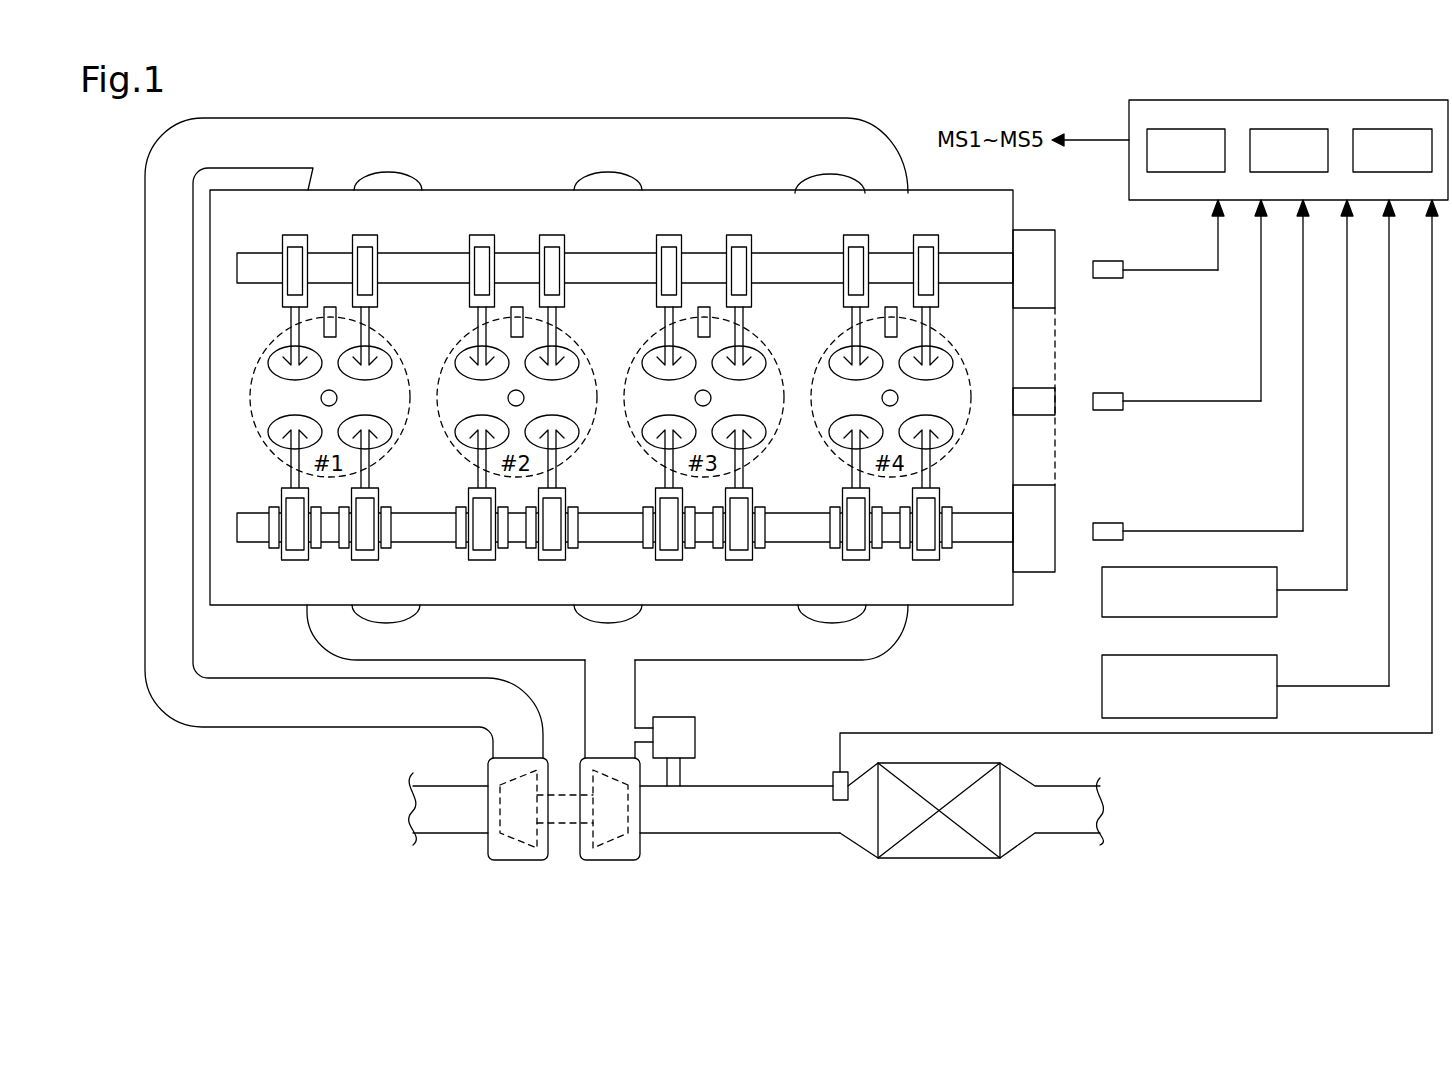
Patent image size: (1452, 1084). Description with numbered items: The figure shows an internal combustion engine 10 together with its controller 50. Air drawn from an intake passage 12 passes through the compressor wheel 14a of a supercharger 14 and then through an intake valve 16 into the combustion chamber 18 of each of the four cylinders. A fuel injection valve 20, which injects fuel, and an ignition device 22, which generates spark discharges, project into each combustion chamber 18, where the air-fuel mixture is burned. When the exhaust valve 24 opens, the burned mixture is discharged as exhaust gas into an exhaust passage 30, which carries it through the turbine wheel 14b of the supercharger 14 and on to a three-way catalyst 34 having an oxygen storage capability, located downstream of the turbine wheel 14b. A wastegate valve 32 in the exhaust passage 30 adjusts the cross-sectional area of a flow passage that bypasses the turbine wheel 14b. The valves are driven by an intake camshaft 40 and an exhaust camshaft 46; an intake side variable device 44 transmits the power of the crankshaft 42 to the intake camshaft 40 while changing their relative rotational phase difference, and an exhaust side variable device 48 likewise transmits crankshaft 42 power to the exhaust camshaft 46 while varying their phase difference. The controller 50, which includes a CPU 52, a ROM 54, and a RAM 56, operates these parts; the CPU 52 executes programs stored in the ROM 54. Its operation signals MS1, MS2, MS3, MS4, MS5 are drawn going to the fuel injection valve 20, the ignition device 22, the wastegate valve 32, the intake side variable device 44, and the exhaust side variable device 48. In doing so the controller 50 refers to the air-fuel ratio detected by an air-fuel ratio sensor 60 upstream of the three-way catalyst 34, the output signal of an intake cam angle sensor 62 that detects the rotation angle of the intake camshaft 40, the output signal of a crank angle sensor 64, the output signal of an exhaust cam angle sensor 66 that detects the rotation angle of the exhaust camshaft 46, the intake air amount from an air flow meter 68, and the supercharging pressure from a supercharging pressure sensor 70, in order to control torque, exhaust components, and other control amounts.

The internal combustion engine 10 is at (910, 124).
The intake passage 12 is at (447, 833).
The supercharger 14 is at (564, 850).
The compressor wheel 14a is at (518, 843).
The turbine wheel 14b is at (610, 831).
The intake valve 16 is at (275, 336).
The combustion chamber 18 is at (316, 397).
The fuel injection valve 20 is at (325, 274).
The ignition device 22 is at (374, 369).
The exhaust valve 24 is at (382, 451).
The exhaust passage 30 is at (671, 650).
The wastegate valve 32 is at (697, 738).
The three-way catalyst 34 is at (933, 845).
The intake camshaft 40 is at (960, 252).
The crankshaft 42 is at (1045, 385).
The intake side variable device 44 is at (1050, 226).
The exhaust camshaft 46 is at (986, 547).
The exhaust side variable device 48 is at (1056, 486).
The controller 50 is at (1253, 133).
The CPU 52 is at (1185, 129).
The ROM 54 is at (1290, 129).
The RAM 56 is at (1393, 129).
The air-fuel ratio sensor 60 is at (833, 778).
The intake cam angle sensor 62 is at (1108, 278).
The crank angle sensor 64 is at (1105, 393).
The exhaust cam angle sensor 66 is at (1105, 523).
The air flow meter 68 is at (1230, 567).
The supercharging pressure sensor 70 is at (1230, 655).
The operation signal to fuel injection valve MS1 is at (901, 334).
The operation signal to ignition plug MS2 is at (903, 398).
The operation signal to wastegate valve MS3 is at (706, 719).
The operation signal to intake valve timing device MS4 is at (1034, 222).
The operation signal to exhaust valve timing device MS5 is at (1048, 582).